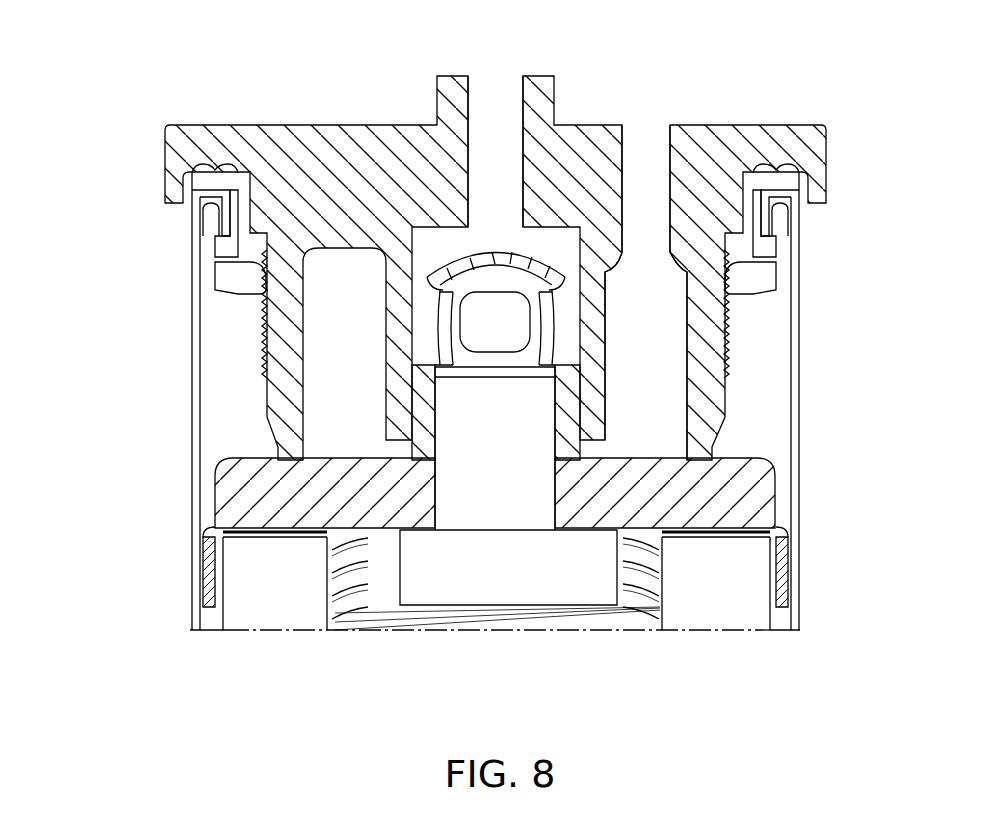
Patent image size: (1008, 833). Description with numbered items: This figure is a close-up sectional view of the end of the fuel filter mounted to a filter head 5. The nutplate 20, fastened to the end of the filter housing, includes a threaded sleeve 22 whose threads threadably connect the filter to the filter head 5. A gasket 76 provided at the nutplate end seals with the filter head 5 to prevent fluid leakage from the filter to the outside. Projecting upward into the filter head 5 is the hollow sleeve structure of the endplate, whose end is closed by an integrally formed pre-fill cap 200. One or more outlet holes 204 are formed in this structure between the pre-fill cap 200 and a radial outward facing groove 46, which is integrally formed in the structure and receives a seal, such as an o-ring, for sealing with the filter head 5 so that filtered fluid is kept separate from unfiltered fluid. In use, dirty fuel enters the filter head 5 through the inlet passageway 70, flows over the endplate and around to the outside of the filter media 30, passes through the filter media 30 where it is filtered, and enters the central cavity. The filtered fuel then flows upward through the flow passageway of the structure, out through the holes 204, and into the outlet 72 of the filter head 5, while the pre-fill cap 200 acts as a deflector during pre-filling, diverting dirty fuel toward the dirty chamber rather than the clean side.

The filter head 5 is at (274, 158).
The nutplate 20 is at (227, 277).
The threaded sleeve 22 is at (267, 337).
The filter media 30 is at (723, 590).
The radial outward facing groove 46 is at (572, 395).
The inlet passageway 70 is at (645, 228).
The outlet 72 is at (497, 193).
The gasket 76 is at (772, 177).
The pre-fill cap 200 is at (510, 257).
The outlet holes 204 is at (437, 320).